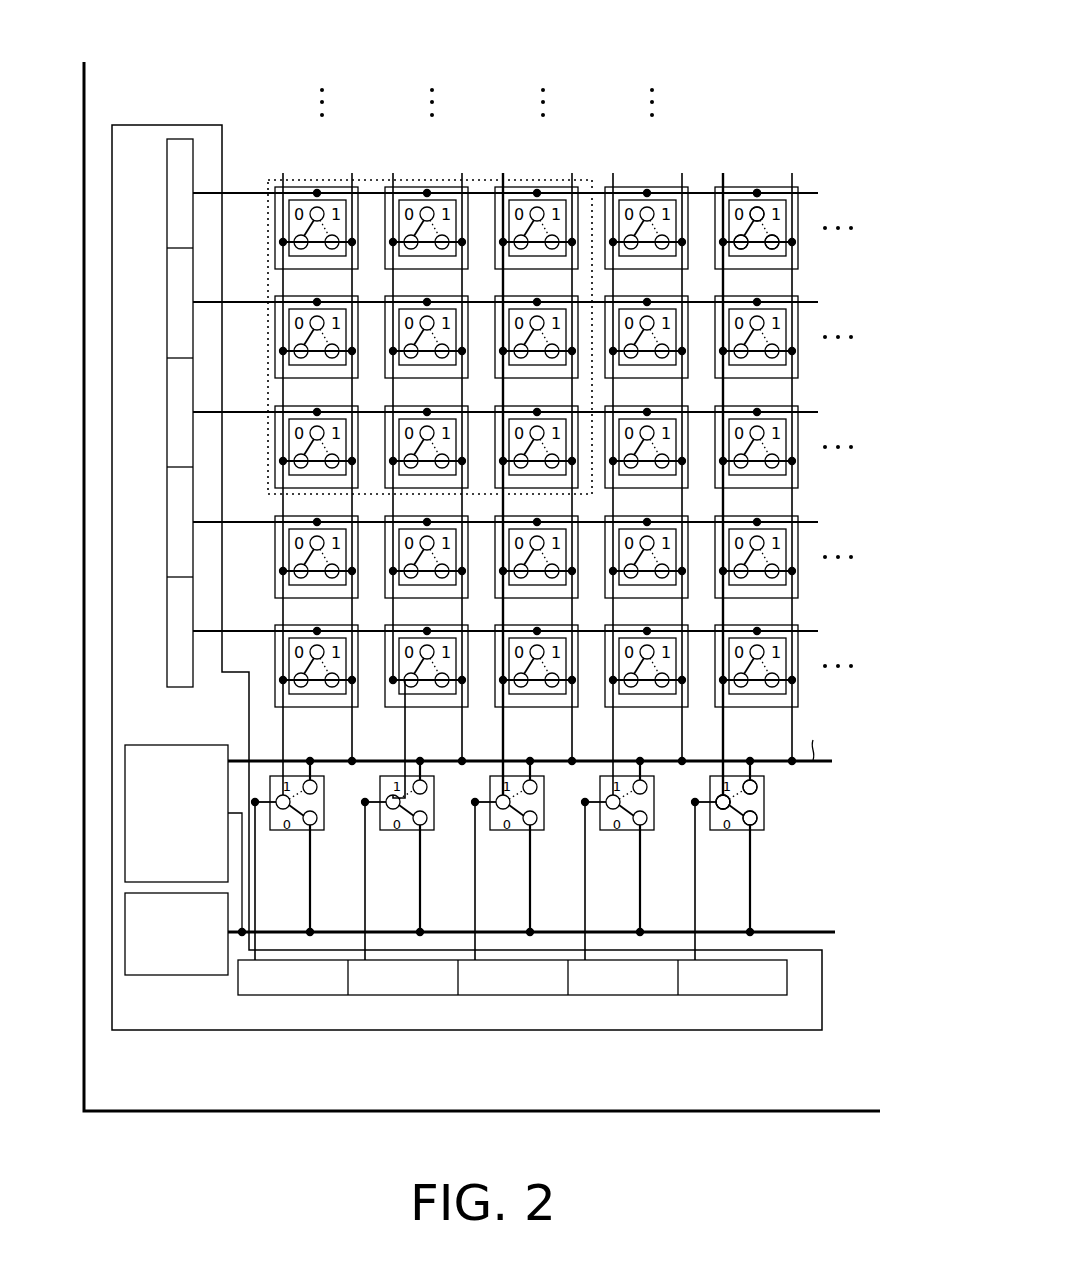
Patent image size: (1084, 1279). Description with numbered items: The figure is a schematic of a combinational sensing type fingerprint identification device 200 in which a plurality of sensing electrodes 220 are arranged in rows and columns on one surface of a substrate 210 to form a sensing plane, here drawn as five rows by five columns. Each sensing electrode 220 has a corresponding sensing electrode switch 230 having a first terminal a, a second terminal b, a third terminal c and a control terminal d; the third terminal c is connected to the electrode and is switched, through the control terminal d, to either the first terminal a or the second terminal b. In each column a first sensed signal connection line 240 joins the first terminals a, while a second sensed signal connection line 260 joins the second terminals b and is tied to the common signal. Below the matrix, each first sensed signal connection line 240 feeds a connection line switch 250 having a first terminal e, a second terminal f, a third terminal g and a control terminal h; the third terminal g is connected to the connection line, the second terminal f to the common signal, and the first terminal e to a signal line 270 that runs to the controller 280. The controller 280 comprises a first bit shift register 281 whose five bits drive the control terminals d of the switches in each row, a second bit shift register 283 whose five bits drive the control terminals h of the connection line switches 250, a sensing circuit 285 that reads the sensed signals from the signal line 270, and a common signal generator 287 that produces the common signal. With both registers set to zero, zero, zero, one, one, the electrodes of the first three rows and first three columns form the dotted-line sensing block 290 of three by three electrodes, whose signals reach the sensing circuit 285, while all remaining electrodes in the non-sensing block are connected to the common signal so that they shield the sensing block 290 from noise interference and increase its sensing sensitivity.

The combinational sensing type fingerprint identification device 200 is at (471, 28).
The substrate 210 is at (468, 1113).
The sensing electrodes 220 is at (316, 191).
The sensing electrode switches 230 is at (330, 190).
The first sensed signal connection lines 240 is at (282, 289).
The connection line switches 250 is at (326, 781).
The second sensed signal connection lines 260 is at (351, 738).
The signal line 270 is at (836, 930).
The controller 280 is at (448, 1030).
The first bit shift register 281 is at (180, 688).
The second bit shift register 283 is at (478, 995).
The sensing circuit 285 is at (176, 976).
The common signal generator 287 is at (212, 744).
The sensing block 290 is at (590, 183).
The first terminal a is at (740, 250).
The second terminal b is at (771, 250).
The third terminal c is at (759, 207).
The control terminal d is at (755, 191).
The first terminal e is at (756, 819).
The second terminal f is at (756, 789).
The third terminal g is at (718, 800).
The control terminal h is at (720, 808).